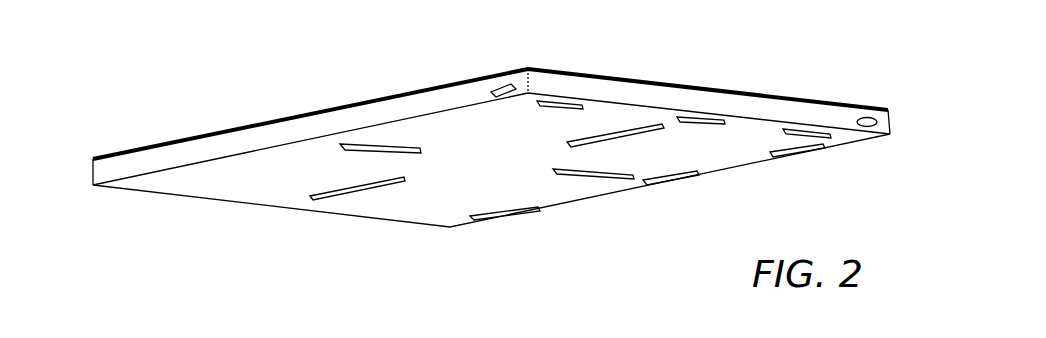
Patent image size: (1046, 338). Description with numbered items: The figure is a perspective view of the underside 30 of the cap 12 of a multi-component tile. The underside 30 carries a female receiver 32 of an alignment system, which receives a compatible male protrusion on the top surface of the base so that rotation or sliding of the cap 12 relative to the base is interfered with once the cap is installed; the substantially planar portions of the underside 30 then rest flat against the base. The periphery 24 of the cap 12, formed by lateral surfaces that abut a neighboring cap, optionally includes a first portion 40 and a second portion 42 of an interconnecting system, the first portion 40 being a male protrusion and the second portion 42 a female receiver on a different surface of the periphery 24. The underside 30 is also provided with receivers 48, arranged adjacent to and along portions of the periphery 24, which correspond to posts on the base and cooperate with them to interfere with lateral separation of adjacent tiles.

The cap 12 is at (258, 113).
The periphery 24 is at (367, 117).
The underside 30 is at (511, 156).
The female receiver 32 is at (373, 148).
The first portion 40 is at (870, 119).
The second portion 42 is at (500, 90).
The receivers 48 is at (793, 131).